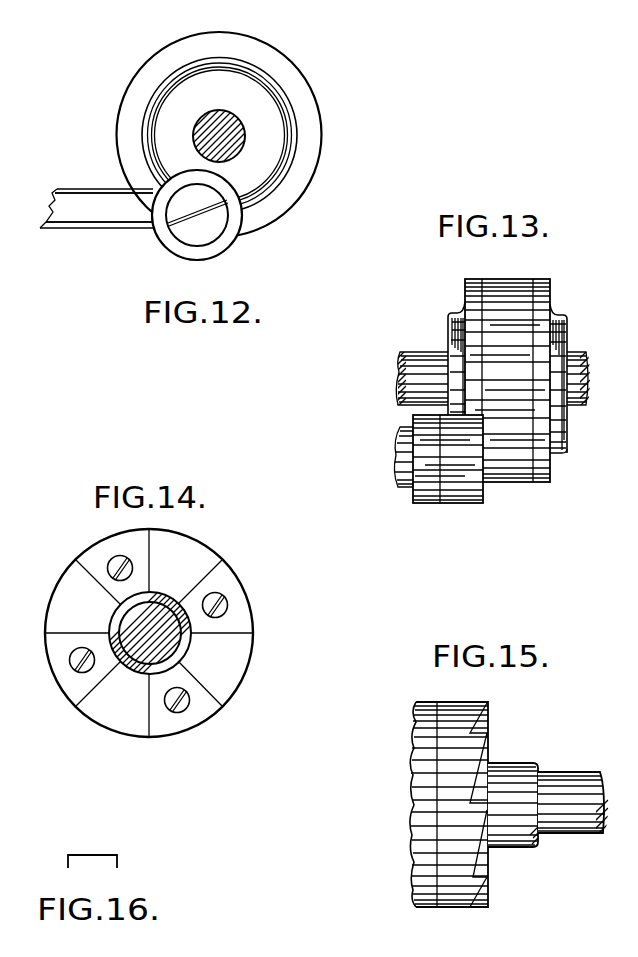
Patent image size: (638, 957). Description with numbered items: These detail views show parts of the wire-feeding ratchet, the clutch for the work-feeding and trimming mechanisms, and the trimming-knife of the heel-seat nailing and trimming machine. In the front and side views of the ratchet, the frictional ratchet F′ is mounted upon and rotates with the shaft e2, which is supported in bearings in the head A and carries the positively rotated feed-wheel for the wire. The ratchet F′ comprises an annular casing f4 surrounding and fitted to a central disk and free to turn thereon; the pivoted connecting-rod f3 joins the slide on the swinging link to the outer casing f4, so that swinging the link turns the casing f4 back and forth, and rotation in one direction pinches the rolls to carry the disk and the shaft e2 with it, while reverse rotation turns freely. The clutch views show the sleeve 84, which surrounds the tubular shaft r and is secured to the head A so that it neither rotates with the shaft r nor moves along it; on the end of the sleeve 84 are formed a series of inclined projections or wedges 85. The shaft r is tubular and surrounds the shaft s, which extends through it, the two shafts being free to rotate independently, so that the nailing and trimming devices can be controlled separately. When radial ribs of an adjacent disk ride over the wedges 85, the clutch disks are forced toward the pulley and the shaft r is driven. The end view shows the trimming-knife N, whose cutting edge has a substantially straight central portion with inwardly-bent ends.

In FIG. 12, the annular casing f4 is at (330, 76).
In FIG. 13, the annular casing f4 is at (487, 275).
In FIG. 12, the frictional ratchet F′ is at (314, 150).
In FIG. 13, the frictional ratchet F′ is at (552, 310).
In FIG. 12, the shaft e2 is at (262, 127).
In FIG. 13, the shaft e2 is at (394, 372).
In FIG. 12, the pivoted connecting-rod f3 is at (98, 182).
In FIG. 13, the pivoted connecting-rod f3 is at (410, 495).
In FIG. 14, the sleeve 84 is at (232, 698).
In FIG. 15, the sleeve 84 is at (451, 907).
In FIG. 14, the inclined projections or wedges 85 is at (149, 633).
In FIG. 15, the inclined projections or wedges 85 is at (489, 733).
In FIG. 14, the shaft s is at (184, 658).
In FIG. 15, the shaft s is at (565, 771).
In FIG. 14, the tubular shaft r is at (129, 674).
In FIG. 15, the tubular shaft r is at (506, 762).
In FIG. 15, the frame or head A is at (412, 806).
In FIG. 16, the trimming-knife N is at (95, 851).